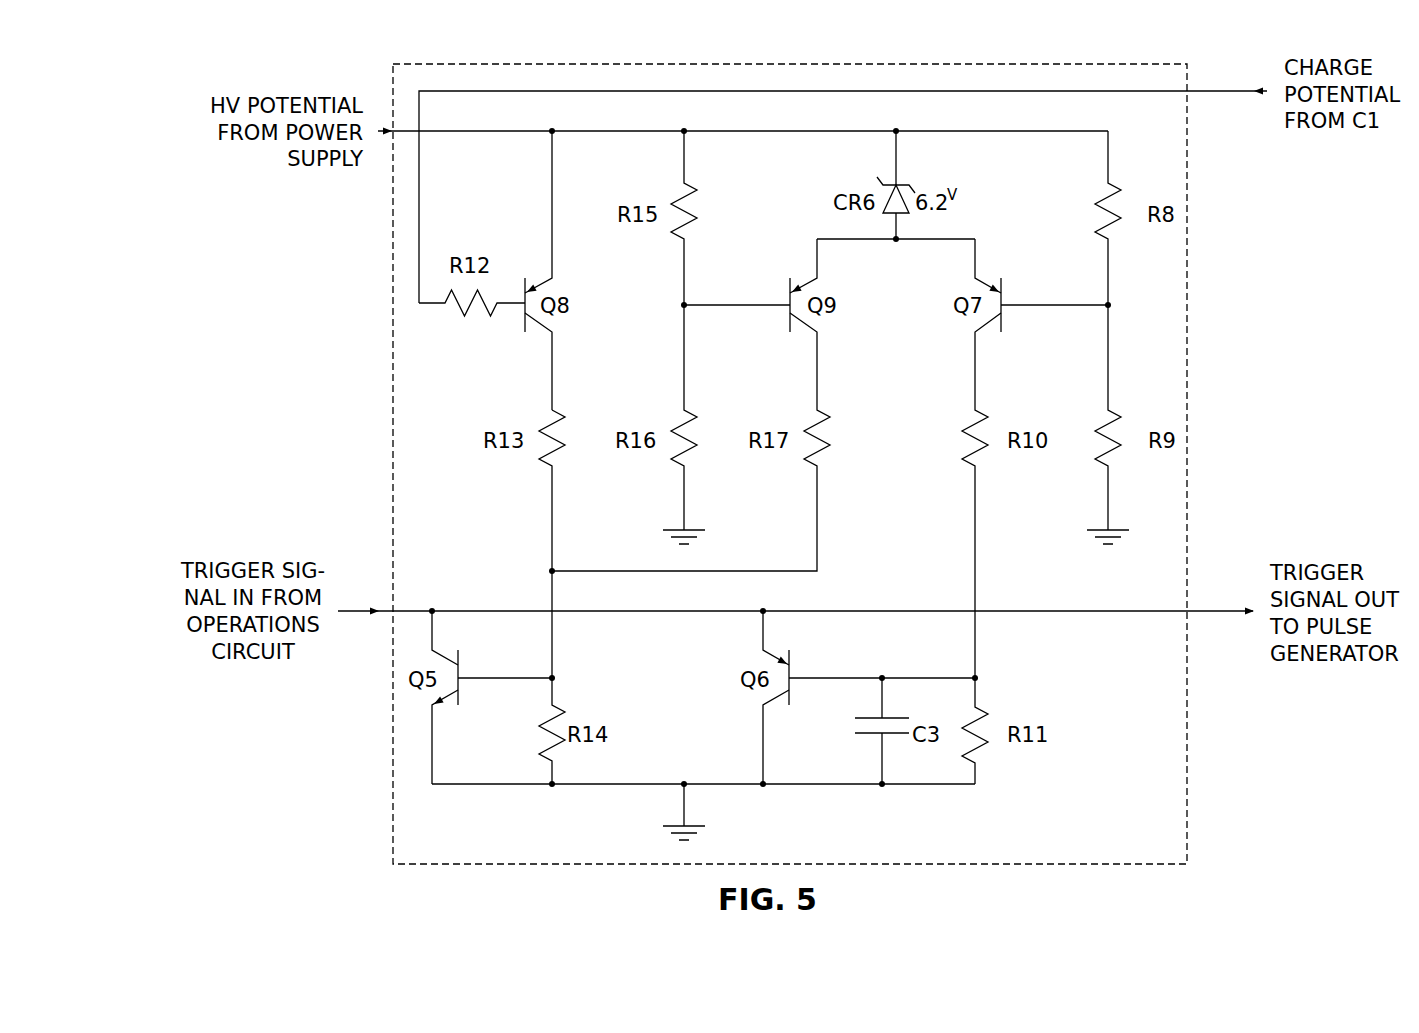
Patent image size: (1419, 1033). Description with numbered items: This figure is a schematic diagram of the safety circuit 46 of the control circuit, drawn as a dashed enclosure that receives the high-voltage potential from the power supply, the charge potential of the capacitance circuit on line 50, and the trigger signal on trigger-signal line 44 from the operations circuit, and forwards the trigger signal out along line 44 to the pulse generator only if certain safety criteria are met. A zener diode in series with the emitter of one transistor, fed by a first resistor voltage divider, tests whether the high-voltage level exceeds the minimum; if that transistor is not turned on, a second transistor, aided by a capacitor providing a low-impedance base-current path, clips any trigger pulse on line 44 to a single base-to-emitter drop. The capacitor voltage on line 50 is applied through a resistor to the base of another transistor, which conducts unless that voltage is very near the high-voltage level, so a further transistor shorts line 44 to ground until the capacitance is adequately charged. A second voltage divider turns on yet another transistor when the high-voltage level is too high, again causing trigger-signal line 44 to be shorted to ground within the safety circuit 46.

The trigger-signal line 44 is at (352, 611).
The safety circuit 46 is at (1187, 373).
The C1 voltage line 50 is at (710, 91).